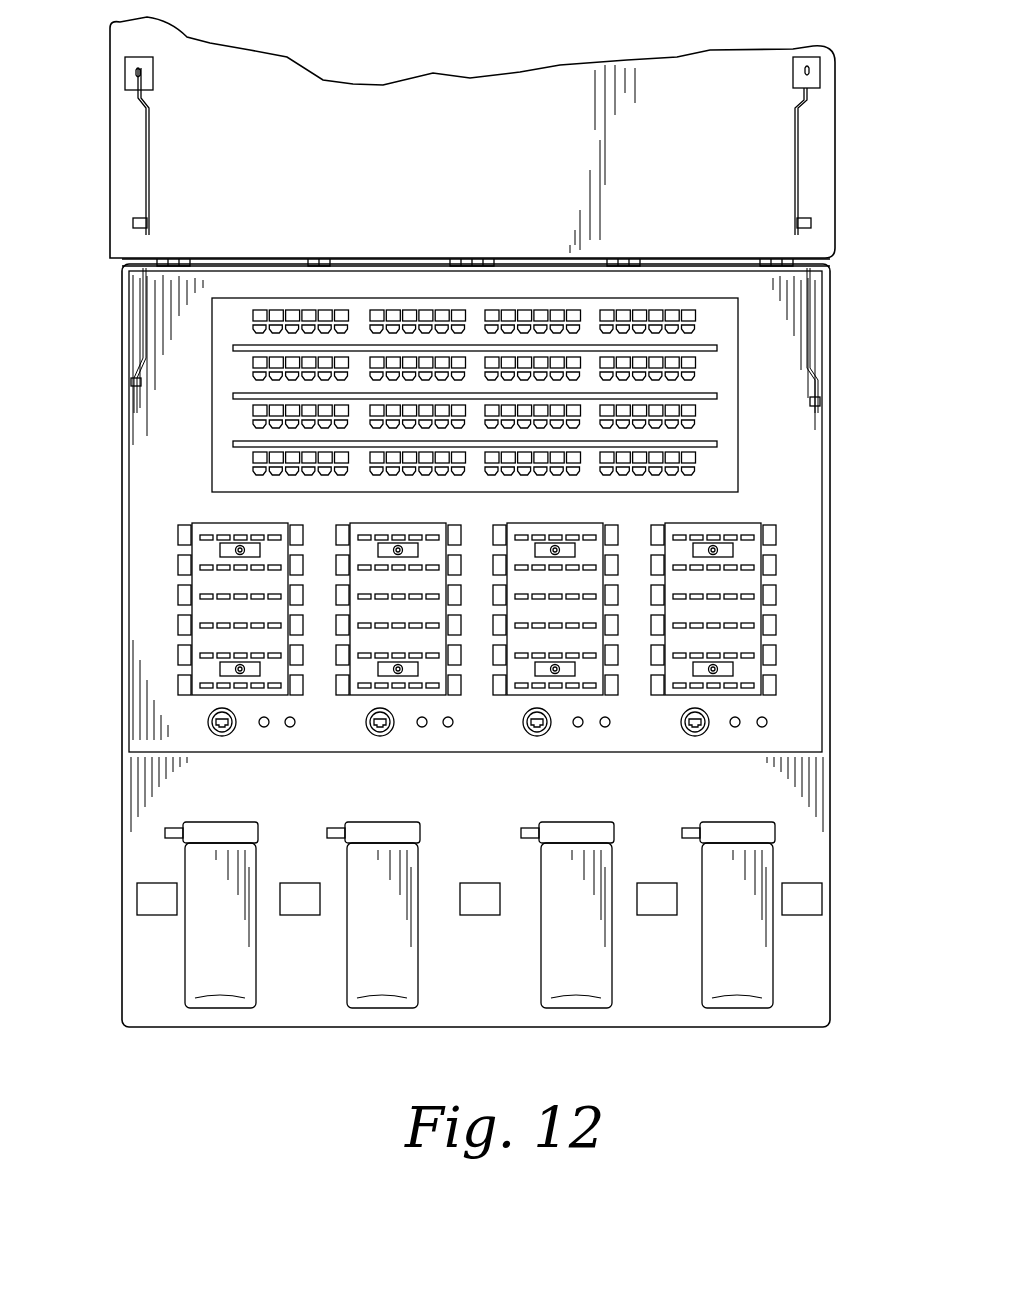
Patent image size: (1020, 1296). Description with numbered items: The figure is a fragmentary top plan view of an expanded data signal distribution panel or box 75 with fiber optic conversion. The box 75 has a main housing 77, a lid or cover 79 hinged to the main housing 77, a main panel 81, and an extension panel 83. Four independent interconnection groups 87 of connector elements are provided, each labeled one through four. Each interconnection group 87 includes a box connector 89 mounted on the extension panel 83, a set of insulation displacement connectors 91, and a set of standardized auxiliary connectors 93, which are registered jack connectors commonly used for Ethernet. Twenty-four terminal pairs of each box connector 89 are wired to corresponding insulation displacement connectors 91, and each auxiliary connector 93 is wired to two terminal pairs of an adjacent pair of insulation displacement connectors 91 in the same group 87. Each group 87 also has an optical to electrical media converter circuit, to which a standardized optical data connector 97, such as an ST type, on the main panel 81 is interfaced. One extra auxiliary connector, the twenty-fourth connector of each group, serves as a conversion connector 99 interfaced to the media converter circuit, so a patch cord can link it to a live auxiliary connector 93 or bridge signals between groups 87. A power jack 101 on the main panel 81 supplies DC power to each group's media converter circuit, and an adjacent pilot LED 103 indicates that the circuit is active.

The expanded data signal distribution panel or box 75 is at (82, 1048).
The main housing 77 is at (830, 474).
The lid or cover 79 is at (365, 100).
The main panel 81 is at (148, 520).
The extension panel 83 is at (823, 947).
The interconnection groups 87 is at (330, 1050).
The box connector 89 is at (353, 875).
The insulation displacement connectors 91 is at (180, 616).
The auxiliary connectors 93 is at (235, 311).
The optical data connector 97 is at (212, 732).
The conversion connector 99 is at (697, 327).
The power jack 101 is at (263, 729).
The pilot LED 103 is at (605, 729).